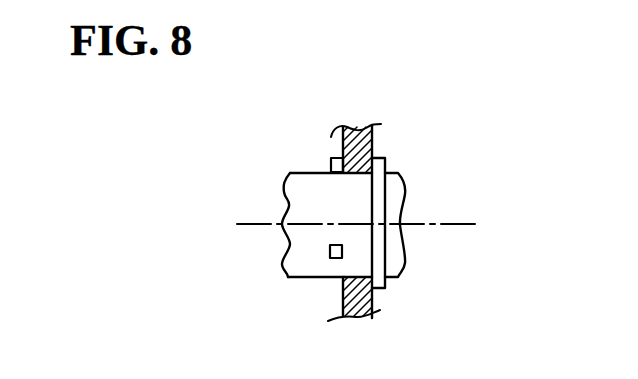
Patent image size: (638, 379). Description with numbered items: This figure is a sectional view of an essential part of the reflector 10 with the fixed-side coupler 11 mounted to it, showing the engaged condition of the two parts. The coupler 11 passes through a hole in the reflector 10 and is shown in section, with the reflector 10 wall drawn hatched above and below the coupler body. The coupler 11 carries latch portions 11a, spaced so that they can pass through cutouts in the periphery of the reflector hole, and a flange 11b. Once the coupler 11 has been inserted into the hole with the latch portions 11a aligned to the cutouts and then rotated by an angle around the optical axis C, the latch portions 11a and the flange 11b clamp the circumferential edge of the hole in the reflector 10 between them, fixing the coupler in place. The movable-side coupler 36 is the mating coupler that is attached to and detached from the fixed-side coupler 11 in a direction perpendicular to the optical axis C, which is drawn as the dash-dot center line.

The fixed-side coupler 11 is at (299, 188).
The latch portions 11a is at (333, 160).
The flange 11b is at (385, 162).
The movable-side coupler 36 is at (358, 272).
The reflector 10 is at (379, 302).
The optical axis C is at (431, 224).